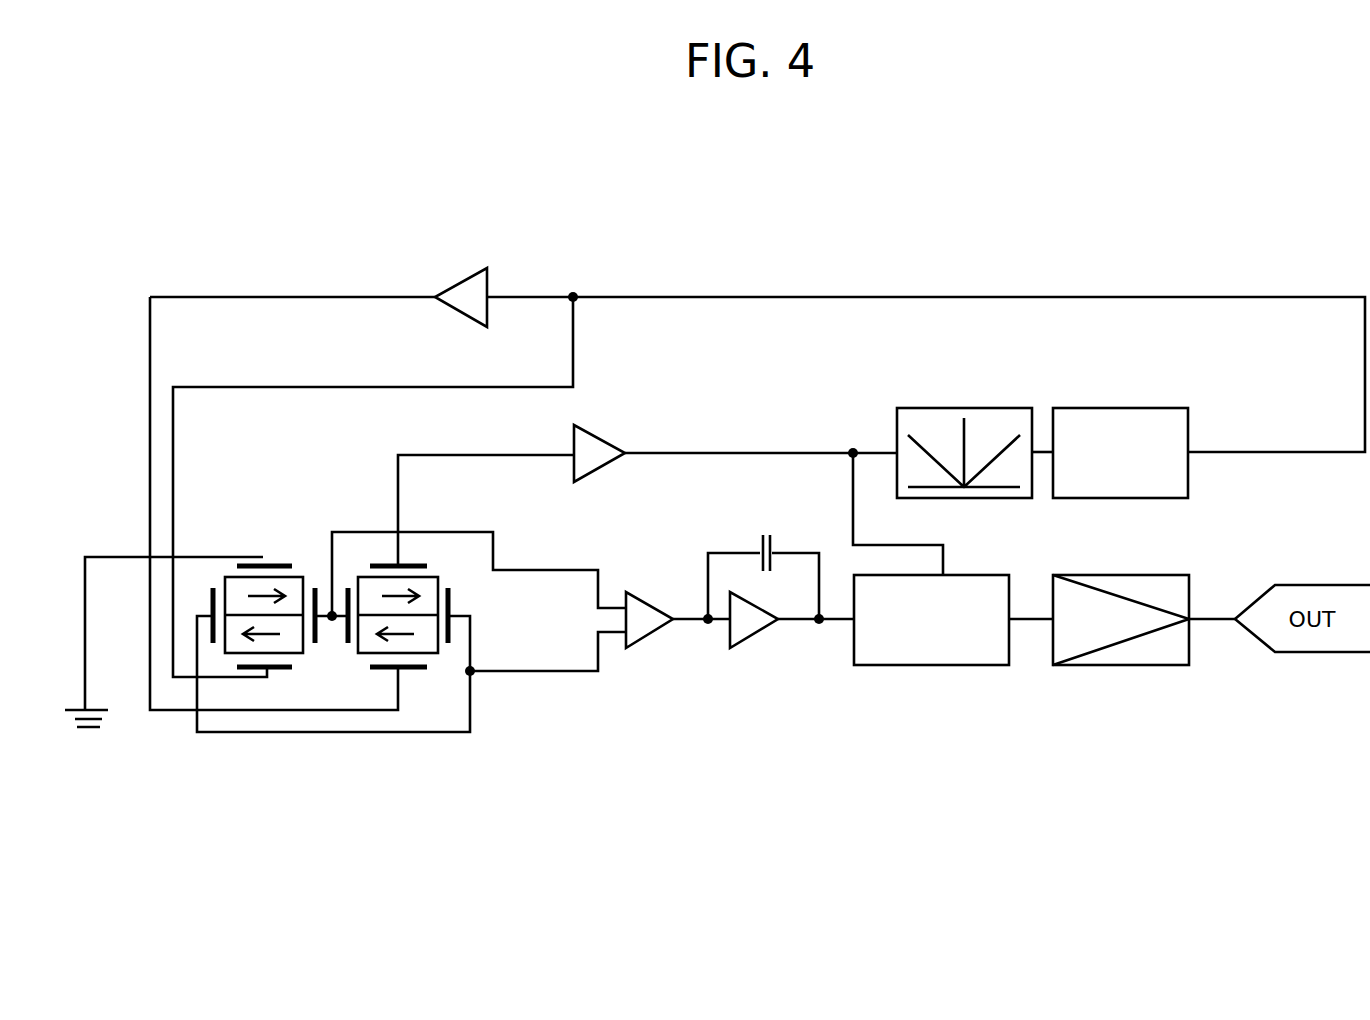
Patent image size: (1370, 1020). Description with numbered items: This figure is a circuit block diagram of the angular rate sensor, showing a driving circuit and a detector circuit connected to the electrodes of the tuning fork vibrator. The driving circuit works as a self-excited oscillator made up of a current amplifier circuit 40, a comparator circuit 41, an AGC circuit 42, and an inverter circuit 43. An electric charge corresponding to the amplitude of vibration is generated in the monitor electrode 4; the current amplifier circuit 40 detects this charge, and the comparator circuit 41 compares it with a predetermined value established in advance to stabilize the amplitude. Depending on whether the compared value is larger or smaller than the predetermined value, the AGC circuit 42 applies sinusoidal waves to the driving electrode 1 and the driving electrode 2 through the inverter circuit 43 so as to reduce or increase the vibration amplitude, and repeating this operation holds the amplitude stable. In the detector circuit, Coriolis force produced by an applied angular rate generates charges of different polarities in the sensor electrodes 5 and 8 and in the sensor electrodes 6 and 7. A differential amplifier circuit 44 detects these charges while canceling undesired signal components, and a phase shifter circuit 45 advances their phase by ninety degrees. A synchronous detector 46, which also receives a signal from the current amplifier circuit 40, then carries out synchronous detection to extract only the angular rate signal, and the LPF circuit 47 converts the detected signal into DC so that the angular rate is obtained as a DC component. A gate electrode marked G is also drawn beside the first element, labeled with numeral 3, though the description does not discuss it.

The driving electrode 1 is at (253, 670).
The driving electrode 2 is at (412, 670).
The gate electrode 3 is at (243, 562).
The monitor electrode 4 is at (388, 562).
The sensor electrode 5 is at (213, 642).
The sensor electrode 6 is at (313, 642).
The sensor electrode 7 is at (348, 642).
The sensor electrode 8 is at (450, 628).
The current amplifier circuit 40 is at (598, 437).
The comparator circuit 41 is at (972, 407).
The AGC circuit 42 is at (1122, 407).
The inverter circuit 43 is at (455, 280).
The differential amplifier circuit 44 is at (648, 635).
The phase shifter circuit 45 is at (757, 633).
The synchronous detector 46 is at (945, 665).
The LPF circuit 47 is at (1135, 665).